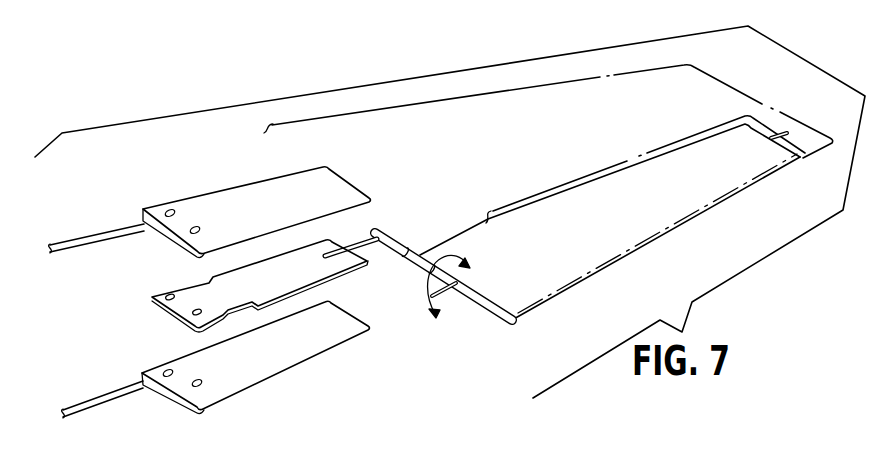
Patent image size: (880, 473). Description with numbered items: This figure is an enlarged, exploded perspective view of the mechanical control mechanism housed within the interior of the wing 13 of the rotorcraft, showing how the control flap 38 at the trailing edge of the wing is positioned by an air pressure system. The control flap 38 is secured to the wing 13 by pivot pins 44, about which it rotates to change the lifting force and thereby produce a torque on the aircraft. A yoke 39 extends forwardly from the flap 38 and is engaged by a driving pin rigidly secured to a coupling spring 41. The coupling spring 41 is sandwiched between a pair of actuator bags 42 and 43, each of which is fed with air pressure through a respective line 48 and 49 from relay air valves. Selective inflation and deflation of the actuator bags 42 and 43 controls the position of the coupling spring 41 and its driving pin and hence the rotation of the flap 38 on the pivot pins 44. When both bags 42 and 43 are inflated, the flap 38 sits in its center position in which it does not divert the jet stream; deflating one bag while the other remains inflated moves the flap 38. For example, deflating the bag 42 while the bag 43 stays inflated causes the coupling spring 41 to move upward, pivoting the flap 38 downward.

The wing 13 is at (742, 84).
The control flap 38 is at (694, 206).
The yoke 39 is at (356, 245).
The coupling spring 41 is at (323, 272).
The actuator bag 42 is at (239, 196).
The actuator bag 43 is at (290, 355).
The pivot pins 44 is at (450, 297).
The line 48 is at (116, 233).
The line 49 is at (113, 396).